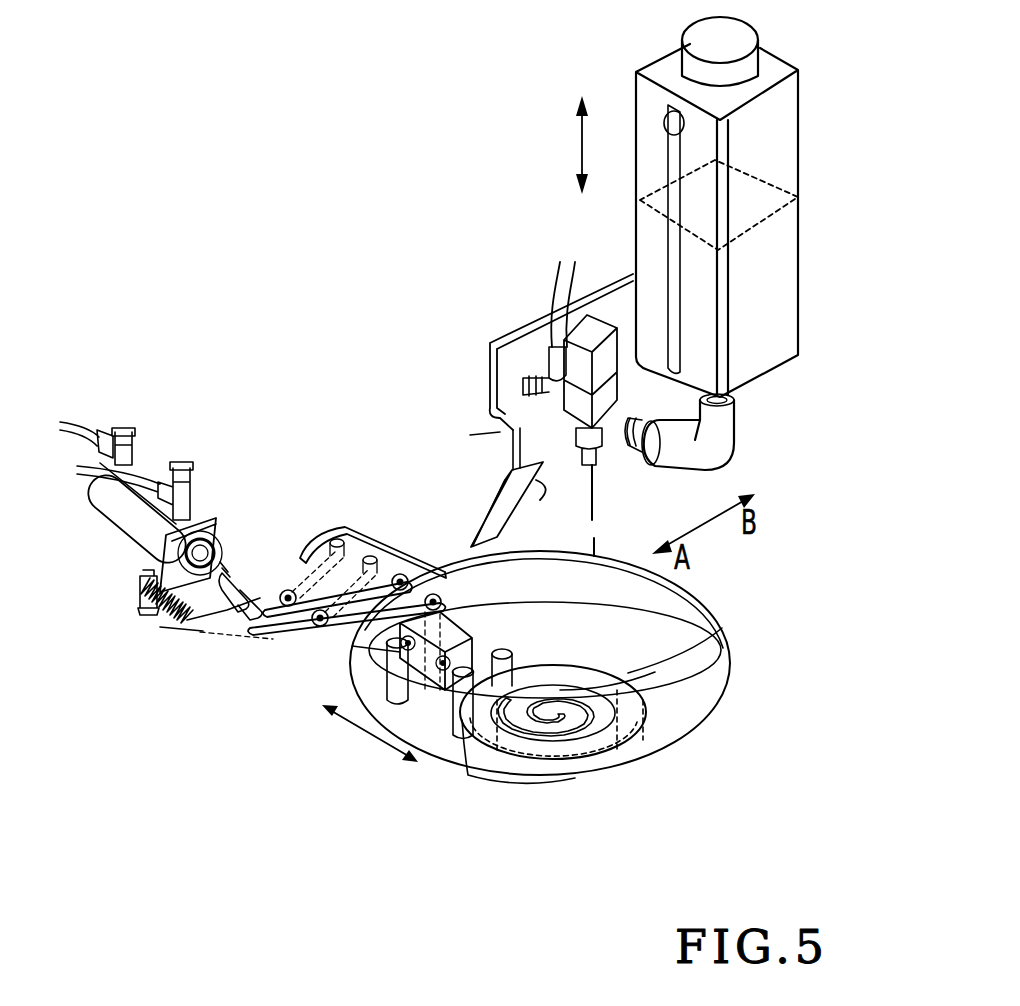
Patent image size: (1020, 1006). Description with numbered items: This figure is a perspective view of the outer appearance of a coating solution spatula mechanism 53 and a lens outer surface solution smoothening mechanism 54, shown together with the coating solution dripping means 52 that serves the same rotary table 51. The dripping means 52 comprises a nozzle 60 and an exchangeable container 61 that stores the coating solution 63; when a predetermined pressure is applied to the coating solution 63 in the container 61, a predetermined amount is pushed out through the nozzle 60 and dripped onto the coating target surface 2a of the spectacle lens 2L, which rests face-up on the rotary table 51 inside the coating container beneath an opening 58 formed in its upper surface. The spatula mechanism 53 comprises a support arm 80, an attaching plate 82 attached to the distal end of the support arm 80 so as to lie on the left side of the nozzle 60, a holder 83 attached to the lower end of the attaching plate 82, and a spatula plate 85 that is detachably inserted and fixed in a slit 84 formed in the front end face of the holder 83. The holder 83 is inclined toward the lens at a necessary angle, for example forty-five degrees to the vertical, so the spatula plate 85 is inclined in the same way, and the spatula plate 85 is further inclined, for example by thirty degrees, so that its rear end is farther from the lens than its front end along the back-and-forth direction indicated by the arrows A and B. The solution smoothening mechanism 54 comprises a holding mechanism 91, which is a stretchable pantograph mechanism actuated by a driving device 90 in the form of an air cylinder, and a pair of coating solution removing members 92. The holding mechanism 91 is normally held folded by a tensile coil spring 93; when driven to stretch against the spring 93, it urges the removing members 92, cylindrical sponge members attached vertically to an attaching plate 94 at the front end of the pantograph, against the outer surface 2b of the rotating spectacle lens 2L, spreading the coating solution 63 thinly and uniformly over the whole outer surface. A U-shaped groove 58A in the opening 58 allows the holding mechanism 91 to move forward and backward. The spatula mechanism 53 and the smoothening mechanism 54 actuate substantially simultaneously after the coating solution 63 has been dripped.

The exchangeable container 61 is at (755, 65).
The coating solution 63 is at (763, 206).
The coating solution dripping means 52 is at (752, 440).
The spatula mechanism 53 is at (444, 362).
The support arm 80 is at (527, 330).
The attaching plate 82 is at (500, 432).
The slit 84 is at (492, 490).
The spatula plate 85 is at (482, 514).
The holder 83 is at (520, 518).
The nozzle 60 is at (598, 510).
The opening 58 is at (728, 662).
The U-shaped groove 58A is at (372, 526).
The left-eye spectacle lens 2L is at (630, 672).
The coating target surface 2a is at (646, 688).
The outer surface 2b is at (470, 760).
The rotary table 51 is at (665, 740).
The coating solution removing member 92 is at (462, 668).
The attaching plate 94 is at (515, 660).
The solution smoothening mechanism 54 is at (252, 559).
The driving device 90 is at (122, 520).
The tensile coil spring 93 is at (157, 622).
The holding mechanism 91 is at (318, 630).